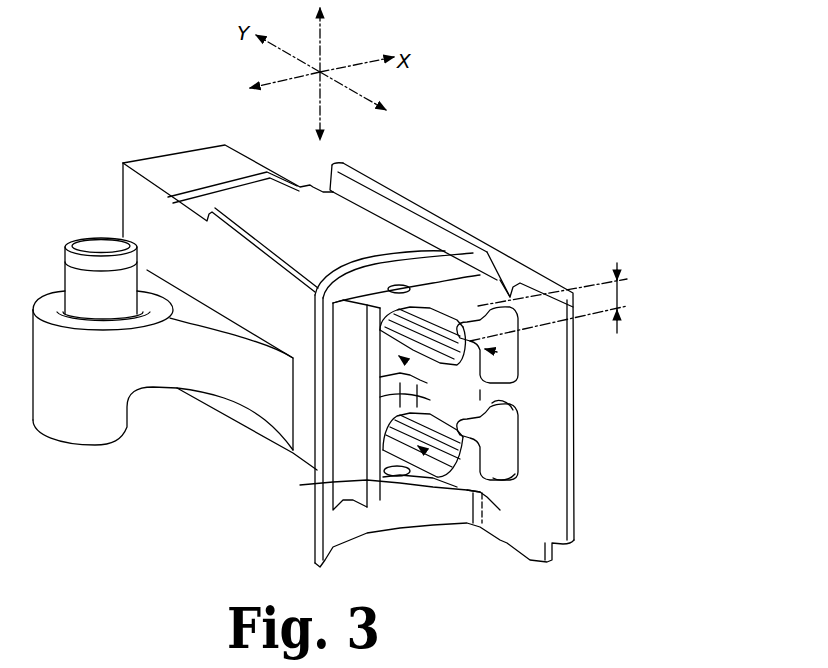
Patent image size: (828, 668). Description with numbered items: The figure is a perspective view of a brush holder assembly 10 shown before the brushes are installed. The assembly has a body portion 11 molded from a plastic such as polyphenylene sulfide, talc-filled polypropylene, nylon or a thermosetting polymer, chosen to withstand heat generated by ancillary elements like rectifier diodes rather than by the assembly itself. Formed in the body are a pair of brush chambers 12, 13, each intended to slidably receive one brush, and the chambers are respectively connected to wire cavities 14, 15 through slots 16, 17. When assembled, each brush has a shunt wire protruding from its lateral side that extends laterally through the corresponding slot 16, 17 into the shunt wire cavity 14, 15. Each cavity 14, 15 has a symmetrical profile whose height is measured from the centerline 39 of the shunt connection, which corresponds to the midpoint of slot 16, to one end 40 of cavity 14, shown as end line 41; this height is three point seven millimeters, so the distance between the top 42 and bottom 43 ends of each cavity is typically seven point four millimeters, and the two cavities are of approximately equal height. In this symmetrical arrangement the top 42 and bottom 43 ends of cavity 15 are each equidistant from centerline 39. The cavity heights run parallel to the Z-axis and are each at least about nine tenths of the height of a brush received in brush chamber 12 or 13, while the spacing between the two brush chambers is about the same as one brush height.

The brush holder assembly 10 is at (476, 176).
The body portion 11 is at (145, 223).
The brush chamber 12 is at (400, 393).
The brush chamber 13 is at (380, 481).
The wire cavity 14 is at (490, 355).
The wire cavity 15 is at (493, 445).
The slot 16 is at (460, 338).
The slot 17 is at (487, 470).
The centerline 39 is at (606, 313).
The end of cavity 40 is at (497, 307).
The end line 41 is at (480, 320).
The top end 42 is at (495, 413).
The bottom end 43 is at (513, 473).